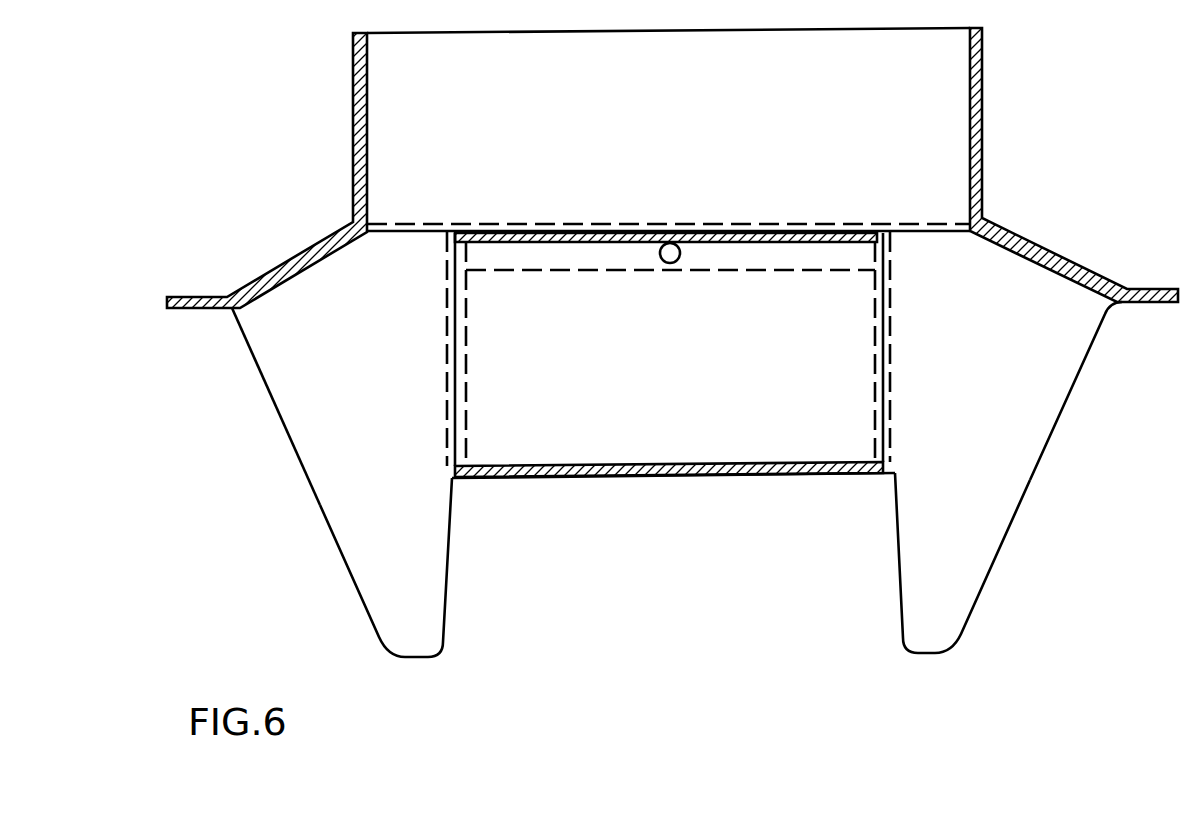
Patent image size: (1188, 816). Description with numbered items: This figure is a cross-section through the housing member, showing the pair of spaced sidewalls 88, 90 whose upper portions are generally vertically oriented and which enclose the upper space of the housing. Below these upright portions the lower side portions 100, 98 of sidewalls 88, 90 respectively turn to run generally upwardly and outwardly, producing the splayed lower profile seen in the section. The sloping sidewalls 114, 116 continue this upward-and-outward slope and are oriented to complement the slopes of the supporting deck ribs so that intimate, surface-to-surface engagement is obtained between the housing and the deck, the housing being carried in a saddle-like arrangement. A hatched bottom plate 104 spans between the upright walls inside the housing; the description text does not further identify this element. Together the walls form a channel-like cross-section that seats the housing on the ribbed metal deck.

The sidewall 88 is at (353, 141).
The sidewall 90 is at (982, 138).
The lower portion of sidewall 98 is at (1032, 451).
The lower portion of sidewall 100 is at (307, 432).
The bottom plate of inner box 104 is at (745, 468).
The sloping sidewall 114 is at (993, 567).
The sloping sidewall 116 is at (346, 565).